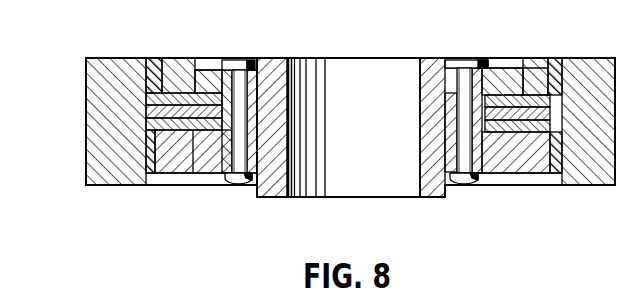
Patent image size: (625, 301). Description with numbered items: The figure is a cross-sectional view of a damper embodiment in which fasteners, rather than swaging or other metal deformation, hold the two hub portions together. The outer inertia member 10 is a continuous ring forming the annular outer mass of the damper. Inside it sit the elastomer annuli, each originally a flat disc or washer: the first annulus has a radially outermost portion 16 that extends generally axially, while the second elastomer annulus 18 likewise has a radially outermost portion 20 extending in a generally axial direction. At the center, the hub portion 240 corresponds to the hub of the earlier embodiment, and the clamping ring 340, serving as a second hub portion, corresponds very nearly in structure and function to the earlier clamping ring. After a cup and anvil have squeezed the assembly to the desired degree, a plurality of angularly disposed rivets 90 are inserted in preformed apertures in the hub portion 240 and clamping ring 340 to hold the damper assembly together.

The outer inertia member 10 is at (100, 88).
The radially outermost portion of first elastomer annulus 16 is at (153, 58).
The clamping ring 340 is at (193, 77).
The radially outermost portion of second elastomer annulus 20 is at (154, 185).
The second elastomer annulus 18 is at (193, 185).
The rivets 90 is at (241, 180).
The hub portion 240 is at (267, 128).